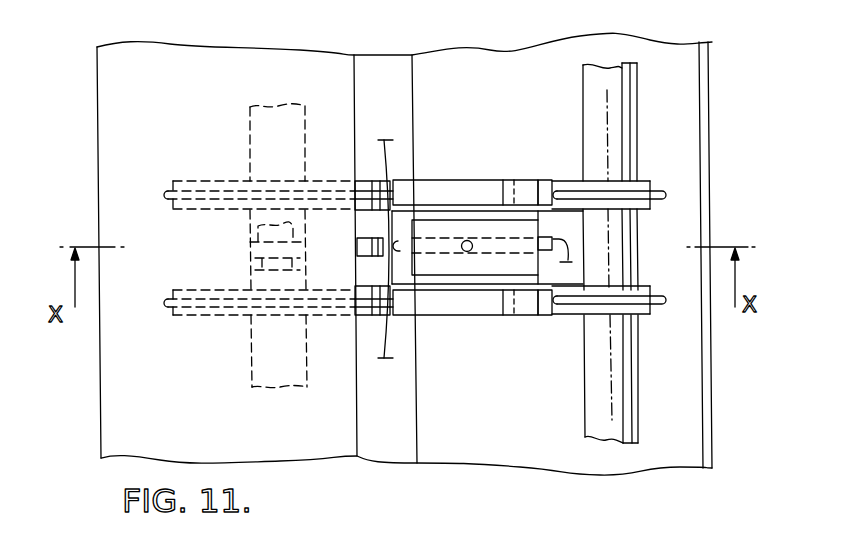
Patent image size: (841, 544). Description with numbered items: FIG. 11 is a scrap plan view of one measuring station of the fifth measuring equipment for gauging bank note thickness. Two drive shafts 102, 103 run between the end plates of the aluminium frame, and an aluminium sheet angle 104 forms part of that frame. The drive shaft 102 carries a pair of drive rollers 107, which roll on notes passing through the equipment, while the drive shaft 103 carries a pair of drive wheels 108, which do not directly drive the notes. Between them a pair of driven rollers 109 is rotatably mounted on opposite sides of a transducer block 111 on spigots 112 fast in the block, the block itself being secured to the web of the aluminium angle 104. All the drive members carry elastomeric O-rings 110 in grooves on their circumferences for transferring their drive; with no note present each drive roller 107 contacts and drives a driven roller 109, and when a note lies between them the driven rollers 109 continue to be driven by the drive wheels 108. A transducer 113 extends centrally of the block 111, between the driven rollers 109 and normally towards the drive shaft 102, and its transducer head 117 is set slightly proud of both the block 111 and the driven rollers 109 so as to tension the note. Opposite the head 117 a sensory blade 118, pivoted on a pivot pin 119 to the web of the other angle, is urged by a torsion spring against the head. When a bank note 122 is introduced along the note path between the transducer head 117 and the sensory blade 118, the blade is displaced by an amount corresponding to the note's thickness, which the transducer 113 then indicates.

The drive shaft 102 is at (248, 110).
The drive shaft 103 is at (637, 93).
The sheet angle 104 is at (710, 91).
The drive roller 107 is at (184, 181).
The drive wheel 108 is at (651, 180).
The driven roller 109 is at (430, 188).
The elastomeric O-ring 110 is at (358, 181).
The transducer block 111 is at (540, 222).
The spigot 112 is at (479, 200).
The transducer 113 is at (527, 249).
The transducer head 117 is at (399, 243).
The sensory blade 118 is at (368, 256).
The pivot pin 119 is at (250, 264).
The bank note 122 is at (400, 117).